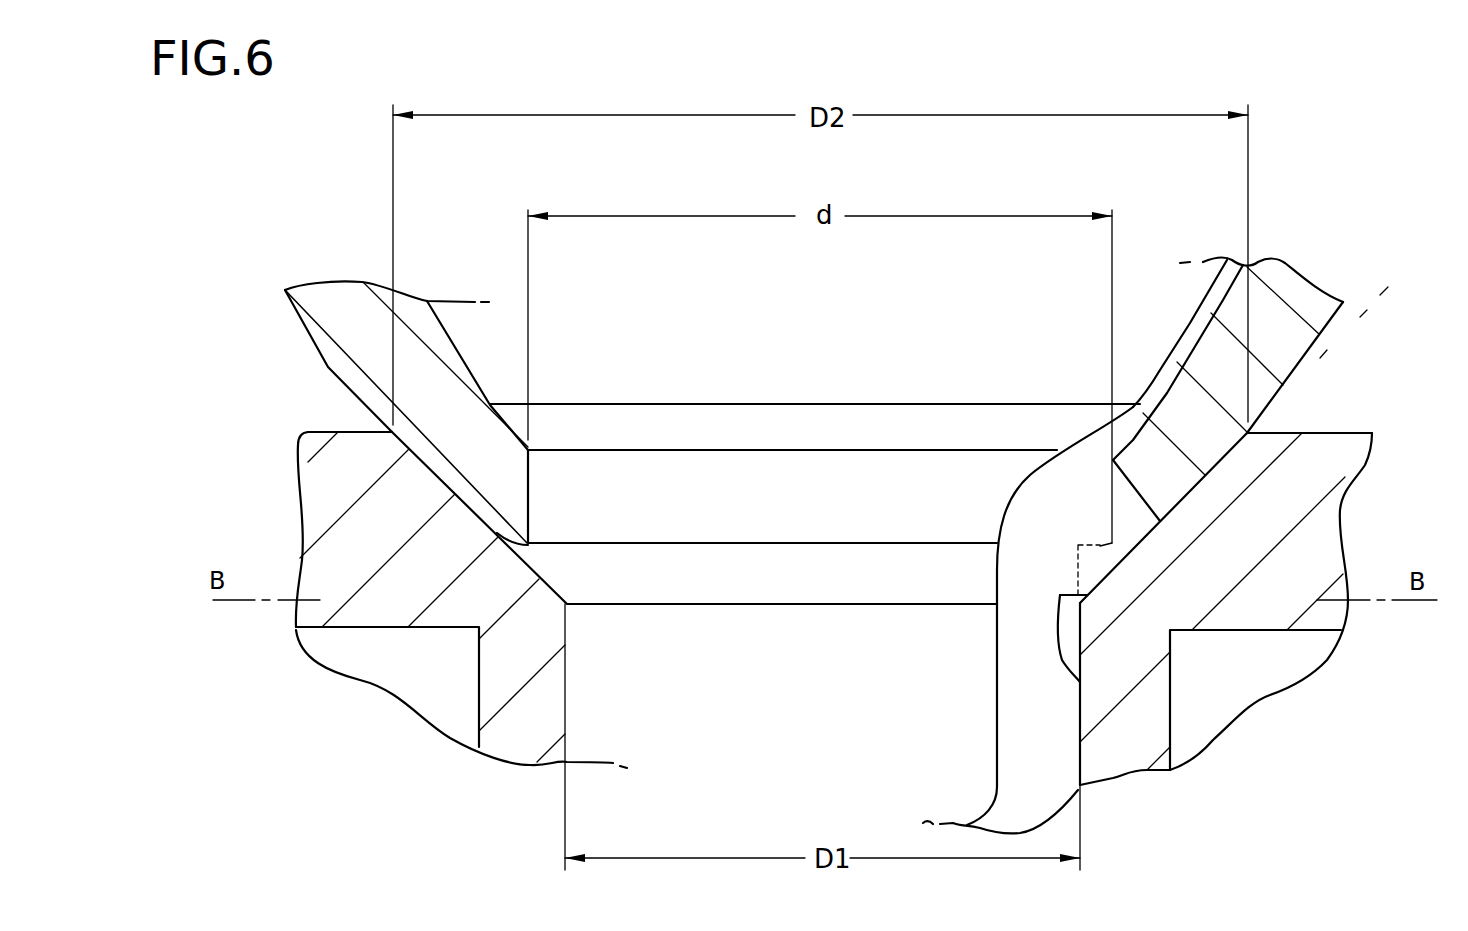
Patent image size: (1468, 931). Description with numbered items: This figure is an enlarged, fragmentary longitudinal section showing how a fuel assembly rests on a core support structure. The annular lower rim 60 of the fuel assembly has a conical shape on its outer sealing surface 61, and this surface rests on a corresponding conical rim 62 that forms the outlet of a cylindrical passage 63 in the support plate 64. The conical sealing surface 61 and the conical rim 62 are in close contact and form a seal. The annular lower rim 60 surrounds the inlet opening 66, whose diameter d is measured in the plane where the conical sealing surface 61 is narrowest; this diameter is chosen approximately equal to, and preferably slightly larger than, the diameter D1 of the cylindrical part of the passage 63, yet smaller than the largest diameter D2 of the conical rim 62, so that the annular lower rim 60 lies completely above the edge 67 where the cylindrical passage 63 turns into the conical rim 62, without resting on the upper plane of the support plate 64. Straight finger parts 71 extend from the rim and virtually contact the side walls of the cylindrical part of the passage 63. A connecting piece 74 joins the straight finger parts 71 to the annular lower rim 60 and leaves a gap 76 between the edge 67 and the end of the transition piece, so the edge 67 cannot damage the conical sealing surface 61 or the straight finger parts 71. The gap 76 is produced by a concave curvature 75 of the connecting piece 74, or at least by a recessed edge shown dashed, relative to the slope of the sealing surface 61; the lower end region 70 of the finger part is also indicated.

The annular lower rim 60 is at (1300, 346).
The outer sealing surface 61 is at (1287, 403).
The conical rim 62 is at (1080, 603).
The cylindrical passage 63 is at (592, 745).
The support plate 64 is at (1350, 483).
The inlet opening 66 is at (813, 450).
The edge 67 is at (568, 604).
The sleeve end flange 70 is at (1053, 790).
The straight finger parts 71 is at (1005, 687).
The connecting piece 74 is at (1030, 522).
The concave curvature 75 is at (1075, 594).
The gap 76 is at (1100, 565).